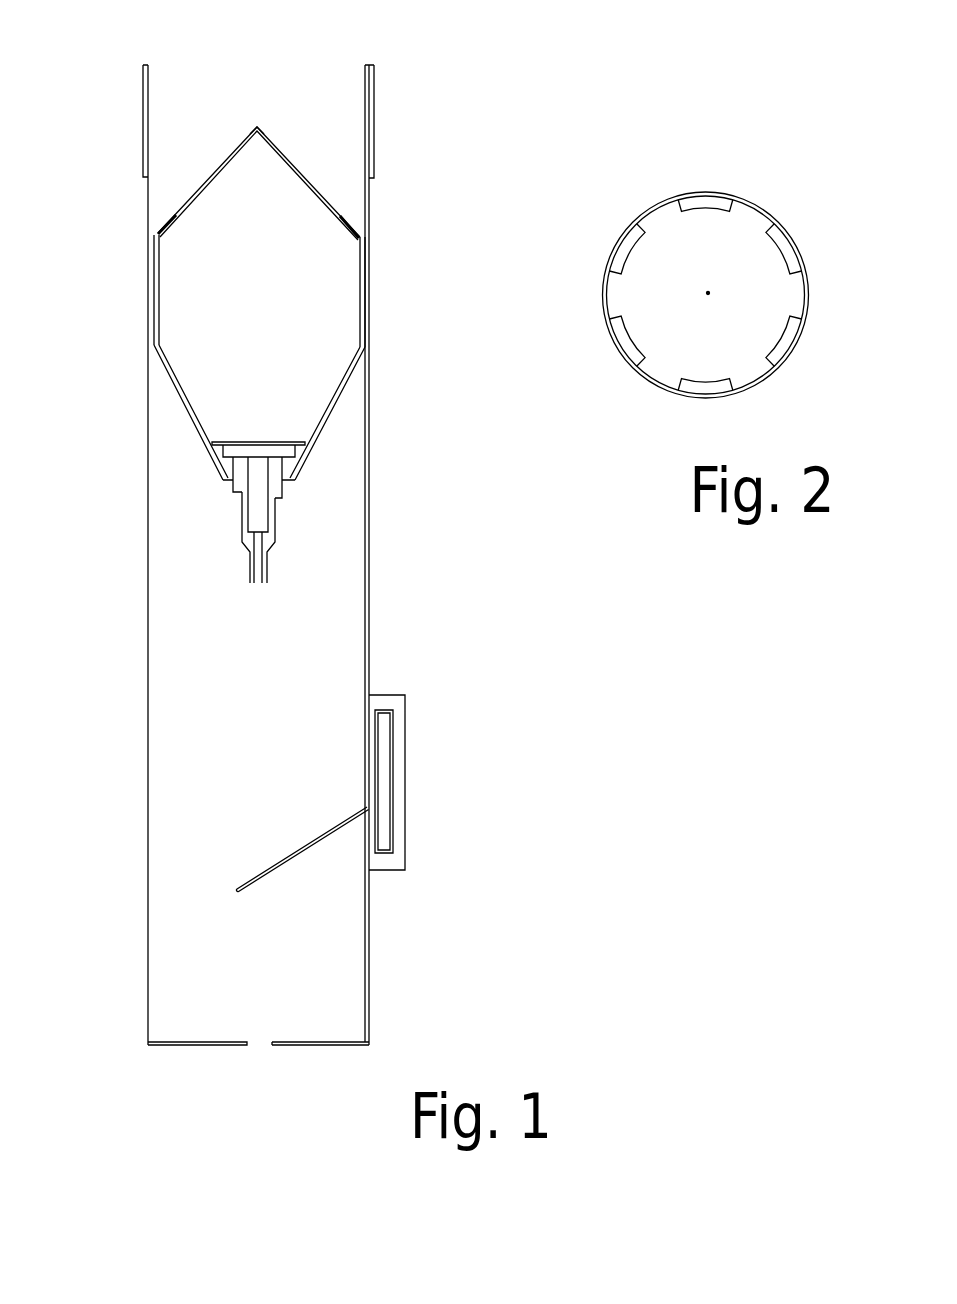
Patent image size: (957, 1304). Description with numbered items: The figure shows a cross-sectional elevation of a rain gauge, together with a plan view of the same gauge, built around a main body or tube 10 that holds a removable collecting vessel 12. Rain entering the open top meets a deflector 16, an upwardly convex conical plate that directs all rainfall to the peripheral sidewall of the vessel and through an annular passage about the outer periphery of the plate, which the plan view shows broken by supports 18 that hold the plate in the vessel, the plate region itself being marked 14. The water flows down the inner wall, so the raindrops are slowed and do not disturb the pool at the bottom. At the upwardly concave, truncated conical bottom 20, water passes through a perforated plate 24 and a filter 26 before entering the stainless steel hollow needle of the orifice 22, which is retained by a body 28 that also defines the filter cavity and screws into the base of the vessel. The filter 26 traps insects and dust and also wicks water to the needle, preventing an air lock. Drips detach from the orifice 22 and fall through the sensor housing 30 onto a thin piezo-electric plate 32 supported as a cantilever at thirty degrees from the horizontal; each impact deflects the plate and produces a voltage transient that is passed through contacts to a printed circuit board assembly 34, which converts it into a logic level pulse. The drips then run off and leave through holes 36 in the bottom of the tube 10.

In FIG. 1, the main body 10 is at (252, 618).
In FIG. 2, the main body 10 is at (656, 297).
In FIG. 1, the collecting vessel 12 is at (262, 373).
In FIG. 1, the conical top / deflector 14 is at (306, 120).
In FIG. 2, the conical top / deflector 14 is at (668, 240).
In FIG. 1, the deflector 16 is at (257, 125).
In FIG. 2, the deflector 16 is at (708, 293).
In FIG. 1, the tabs 18 is at (358, 213).
In FIG. 2, the tabs 18 is at (625, 250).
In FIG. 1, the bottom 20 is at (183, 403).
In FIG. 1, the orifice 22 is at (266, 560).
In FIG. 1, the perforated plate 24 is at (258, 443).
In FIG. 1, the filter 26 is at (268, 468).
In FIG. 1, the body 28 is at (240, 510).
In FIG. 1, the sensor housing 30 is at (148, 710).
In FIG. 1, the piezo-electric plate 32 is at (300, 853).
In FIG. 1, the printed circuit board assembly 34 is at (405, 748).
In FIG. 1, the holes 36 is at (247, 1045).